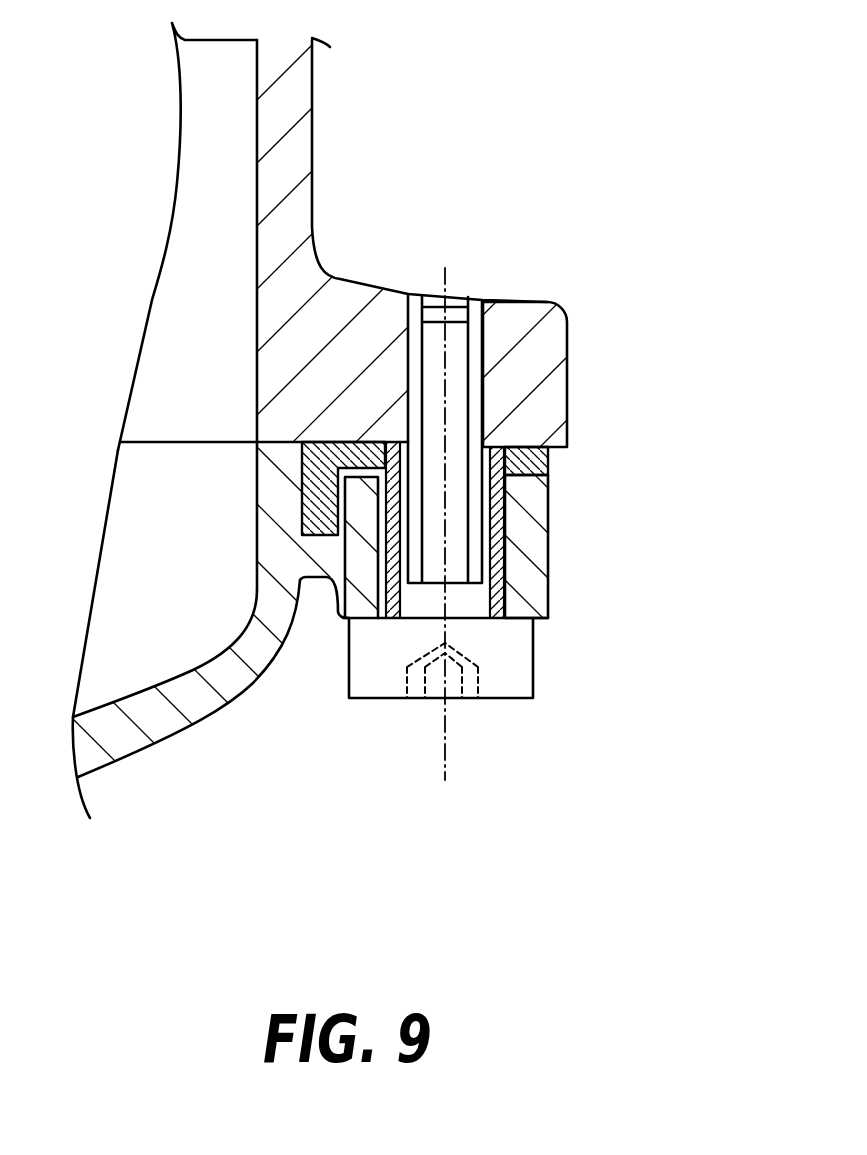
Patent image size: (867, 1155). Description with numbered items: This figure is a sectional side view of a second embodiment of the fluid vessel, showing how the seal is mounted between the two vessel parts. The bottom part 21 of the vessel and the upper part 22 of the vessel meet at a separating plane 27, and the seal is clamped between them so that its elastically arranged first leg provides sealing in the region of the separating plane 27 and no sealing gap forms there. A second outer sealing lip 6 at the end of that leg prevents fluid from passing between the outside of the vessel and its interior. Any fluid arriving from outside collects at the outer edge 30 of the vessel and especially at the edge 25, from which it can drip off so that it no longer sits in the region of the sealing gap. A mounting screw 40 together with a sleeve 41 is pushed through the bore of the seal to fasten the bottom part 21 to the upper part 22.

The upper part of the vessel 22 is at (307, 78).
The outer edge 30 is at (567, 360).
The separating plane 27 is at (167, 441).
The edge 25 is at (610, 462).
The second outer sealing lip 6 is at (528, 477).
The sleeve 41 is at (497, 620).
The mounting screw 40 is at (382, 698).
The bottom part of the vessel 21 is at (95, 755).